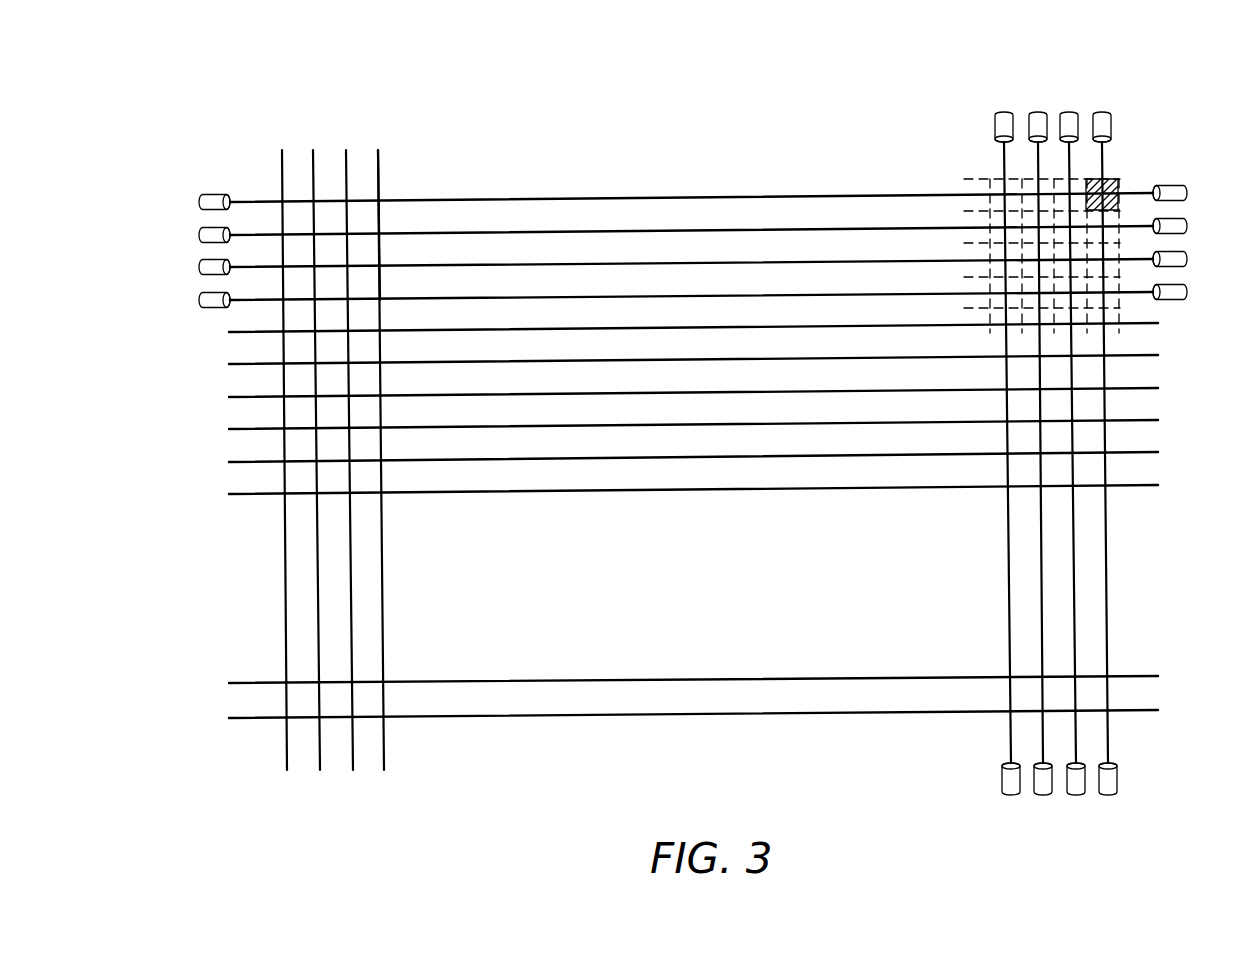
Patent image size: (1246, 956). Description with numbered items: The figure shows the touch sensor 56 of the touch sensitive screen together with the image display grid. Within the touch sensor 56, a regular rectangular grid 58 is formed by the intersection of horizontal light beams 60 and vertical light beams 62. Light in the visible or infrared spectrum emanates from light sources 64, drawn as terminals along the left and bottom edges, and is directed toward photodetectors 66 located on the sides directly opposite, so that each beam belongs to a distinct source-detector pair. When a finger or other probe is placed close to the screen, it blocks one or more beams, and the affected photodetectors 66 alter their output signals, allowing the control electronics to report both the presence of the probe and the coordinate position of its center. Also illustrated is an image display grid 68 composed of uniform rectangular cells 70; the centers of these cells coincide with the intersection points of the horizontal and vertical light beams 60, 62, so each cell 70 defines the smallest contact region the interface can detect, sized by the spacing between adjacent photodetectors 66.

The touch sensor 56 is at (732, 86).
The regular rectangular grid 58 is at (386, 193).
The horizontal light beams 60 is at (417, 266).
The vertical light beams 62 is at (286, 501).
The light sources 64 is at (213, 195).
The photodetectors 66 is at (1108, 130).
The image display grid 68 is at (999, 186).
The uniform rectangular cells 70 is at (1115, 175).